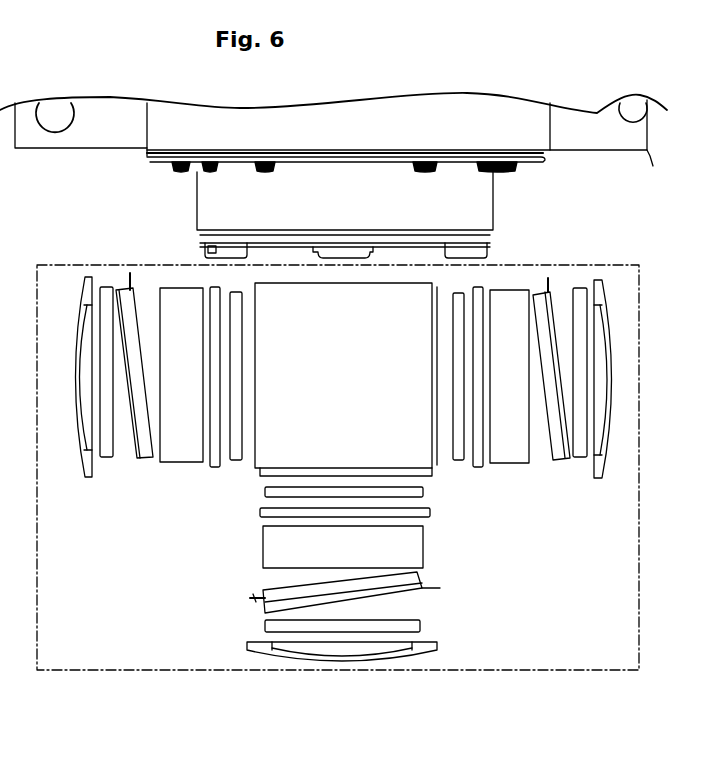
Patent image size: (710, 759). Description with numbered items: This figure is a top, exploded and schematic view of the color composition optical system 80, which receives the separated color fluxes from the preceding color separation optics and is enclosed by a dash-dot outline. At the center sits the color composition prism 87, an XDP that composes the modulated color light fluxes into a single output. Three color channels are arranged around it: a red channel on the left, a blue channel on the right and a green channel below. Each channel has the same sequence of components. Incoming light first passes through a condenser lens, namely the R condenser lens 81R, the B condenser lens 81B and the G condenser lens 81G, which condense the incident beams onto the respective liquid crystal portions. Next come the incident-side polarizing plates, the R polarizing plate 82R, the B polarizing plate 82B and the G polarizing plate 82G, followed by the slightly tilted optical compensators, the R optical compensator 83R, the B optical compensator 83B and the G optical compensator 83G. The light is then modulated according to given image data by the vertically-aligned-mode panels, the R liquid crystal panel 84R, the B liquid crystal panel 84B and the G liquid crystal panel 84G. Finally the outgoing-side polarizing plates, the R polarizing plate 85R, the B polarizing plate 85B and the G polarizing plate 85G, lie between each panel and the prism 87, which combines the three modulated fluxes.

The color composition optical system 80 is at (639, 466).
The color composition prism 87 is at (387, 298).
The R condenser lens 81R is at (80, 468).
The R polarizing plate on the incident side 82R is at (107, 457).
The R optical compensator 83R is at (147, 462).
The R liquid crystal panel 84R is at (172, 465).
The R polarizing plate on the outgoing side 85R is at (232, 462).
The B condenser lens 81B is at (615, 365).
The B polarizing plate on the incident side 82B is at (577, 460).
The B optical compensator 83B is at (555, 467).
The B liquid crystal panel 84B is at (518, 463).
The B polarizing plate on the outgoing side 85B is at (458, 461).
The G condenser lens 81G is at (337, 665).
The G polarizing plate on the incident side 82G is at (417, 625).
The G optical compensator 83G is at (420, 580).
The G liquid crystal panel 84G is at (423, 546).
The G polarizing plate on the outgoing side 85G is at (423, 492).